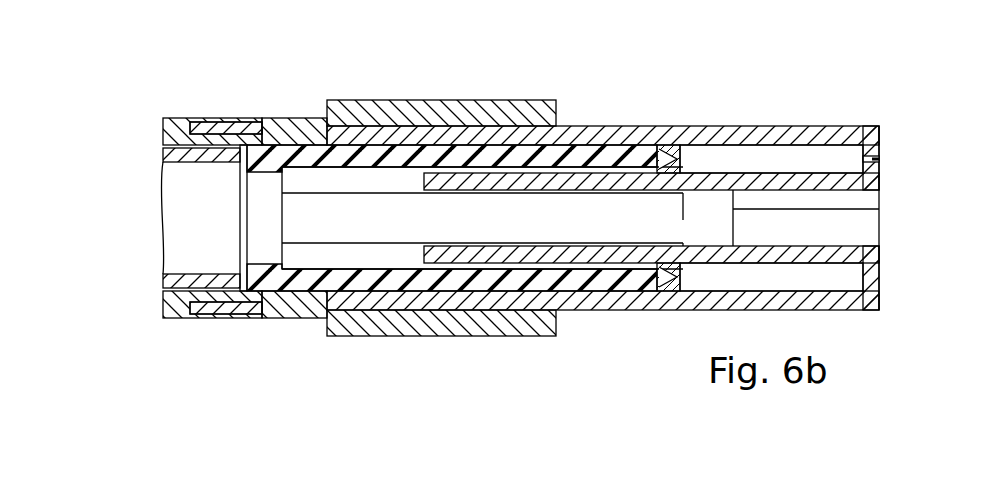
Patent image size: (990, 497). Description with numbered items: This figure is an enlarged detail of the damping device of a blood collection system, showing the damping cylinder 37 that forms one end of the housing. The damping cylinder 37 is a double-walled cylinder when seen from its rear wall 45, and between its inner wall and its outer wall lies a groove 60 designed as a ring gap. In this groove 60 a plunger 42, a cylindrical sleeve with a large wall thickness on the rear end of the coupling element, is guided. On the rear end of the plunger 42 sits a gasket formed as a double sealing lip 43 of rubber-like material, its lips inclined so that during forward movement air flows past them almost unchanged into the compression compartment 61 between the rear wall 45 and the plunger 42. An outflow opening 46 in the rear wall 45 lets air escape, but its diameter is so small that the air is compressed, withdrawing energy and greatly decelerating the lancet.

The damping cylinder 37 is at (655, 133).
The plunger 42 is at (555, 160).
The double sealing lip 43 is at (683, 147).
The rear wall 45 is at (880, 283).
The outflow opening 46 is at (880, 160).
The groove 60 is at (760, 157).
The compression compartment 61 is at (818, 157).